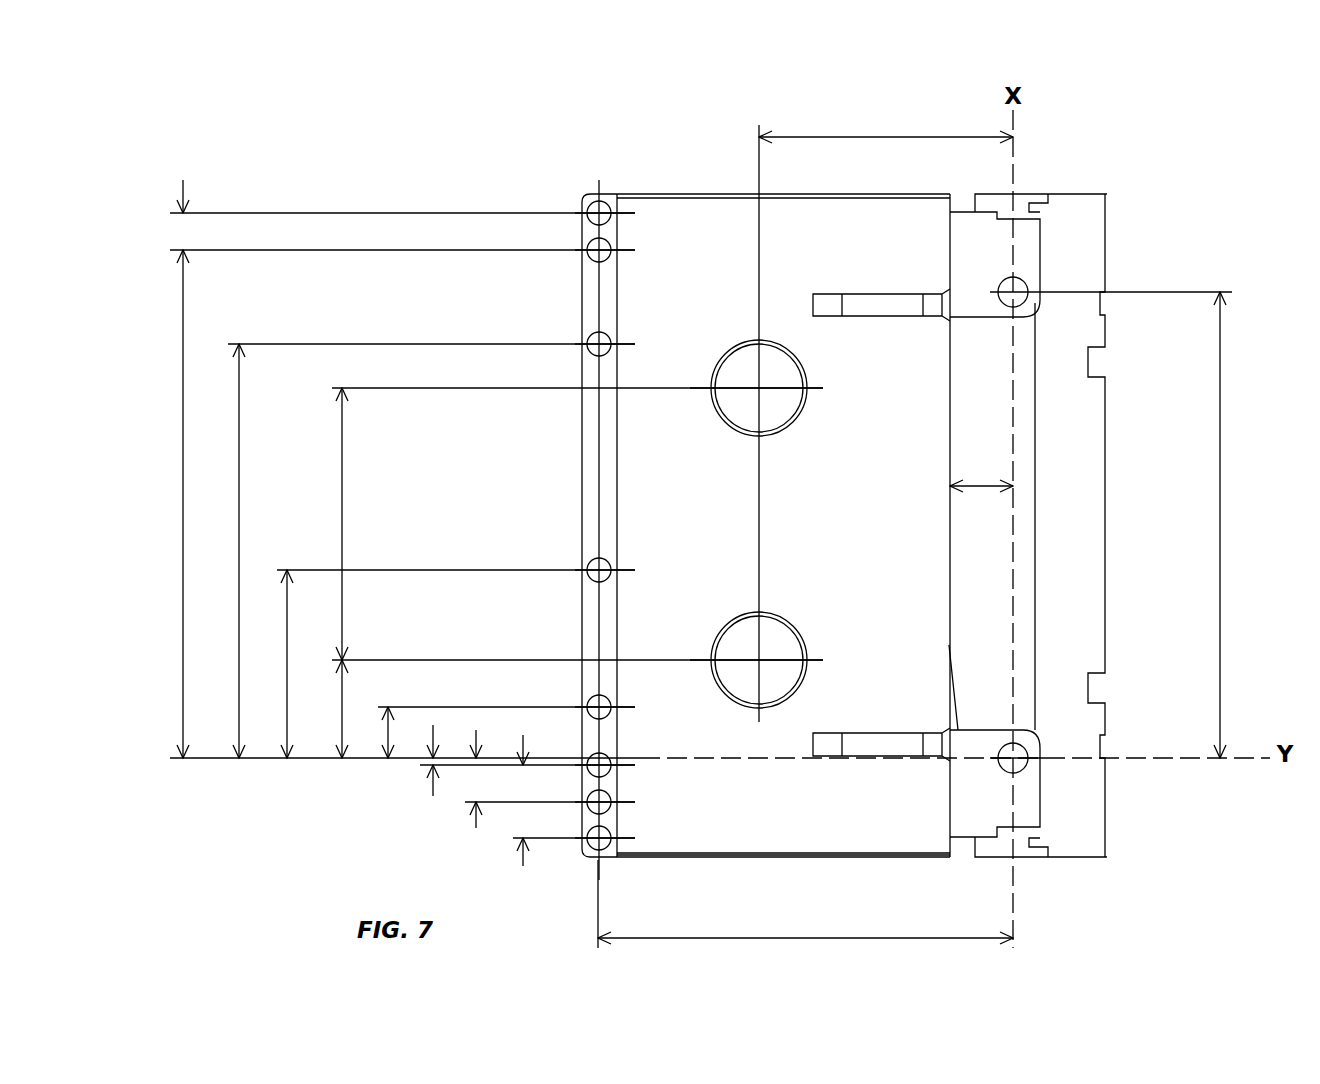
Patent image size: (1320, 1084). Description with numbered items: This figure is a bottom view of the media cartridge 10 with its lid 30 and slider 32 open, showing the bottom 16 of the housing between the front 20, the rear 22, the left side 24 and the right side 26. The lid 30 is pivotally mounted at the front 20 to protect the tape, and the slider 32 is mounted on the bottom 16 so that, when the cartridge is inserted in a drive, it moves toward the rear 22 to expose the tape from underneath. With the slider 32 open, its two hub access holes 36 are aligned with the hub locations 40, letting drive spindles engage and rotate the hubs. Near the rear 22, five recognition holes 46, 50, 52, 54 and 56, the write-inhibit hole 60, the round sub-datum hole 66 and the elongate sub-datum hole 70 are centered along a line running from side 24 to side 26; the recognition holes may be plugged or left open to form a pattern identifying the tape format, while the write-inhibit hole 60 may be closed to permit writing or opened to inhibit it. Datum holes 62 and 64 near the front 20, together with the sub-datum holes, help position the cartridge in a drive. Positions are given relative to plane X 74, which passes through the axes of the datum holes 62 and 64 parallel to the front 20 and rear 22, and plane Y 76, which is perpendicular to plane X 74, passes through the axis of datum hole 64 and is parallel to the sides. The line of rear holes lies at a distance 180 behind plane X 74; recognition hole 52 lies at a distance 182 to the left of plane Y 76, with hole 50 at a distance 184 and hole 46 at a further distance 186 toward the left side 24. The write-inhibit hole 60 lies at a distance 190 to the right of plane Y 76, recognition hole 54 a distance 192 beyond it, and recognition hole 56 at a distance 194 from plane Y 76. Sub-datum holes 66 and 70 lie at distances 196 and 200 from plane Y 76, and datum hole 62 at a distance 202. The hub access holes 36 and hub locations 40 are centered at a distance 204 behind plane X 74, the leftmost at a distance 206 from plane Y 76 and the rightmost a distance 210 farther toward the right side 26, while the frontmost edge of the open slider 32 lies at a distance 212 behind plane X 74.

The media cartridge 10 is at (568, 152).
The bottom 16 is at (962, 271).
The front 20 is at (1130, 503).
The rear 22 is at (553, 505).
The left side 24 is at (697, 873).
The right side 26 is at (700, 178).
The lid 30 is at (1106, 578).
The slider 32 is at (880, 446).
The hub access holes 36 is at (772, 436).
The location of the hubs 40 is at (795, 524).
The recognition hole 46 is at (612, 835).
The recognition hole 50 is at (612, 799).
The recognition hole 52 is at (612, 761).
The recognition hole 54 is at (612, 216).
The recognition hole 56 is at (612, 567).
The write-inhibit hole 60 is at (612, 250).
The datum hole 62 is at (1028, 300).
The datum hole 64 is at (1027, 748).
The round sub-datum hole 66 is at (612, 704).
The elongate sub-datum hole 70 is at (612, 338).
The plane X 74 is at (1020, 127).
The plane Y 76 is at (1252, 760).
The distance 180 is at (800, 937).
The distance 182 is at (433, 790).
The distance 184 is at (476, 825).
The distance 186 is at (523, 860).
The distance 190 is at (182, 488).
The distance 192 is at (182, 232).
The distance 194 is at (287, 680).
The distance 196 is at (388, 735).
The distance 200 is at (239, 562).
The distance 202 is at (1221, 500).
The distance 204 is at (895, 137).
The distance 206 is at (342, 725).
The distance 210 is at (342, 545).
The distance 212 is at (982, 486).